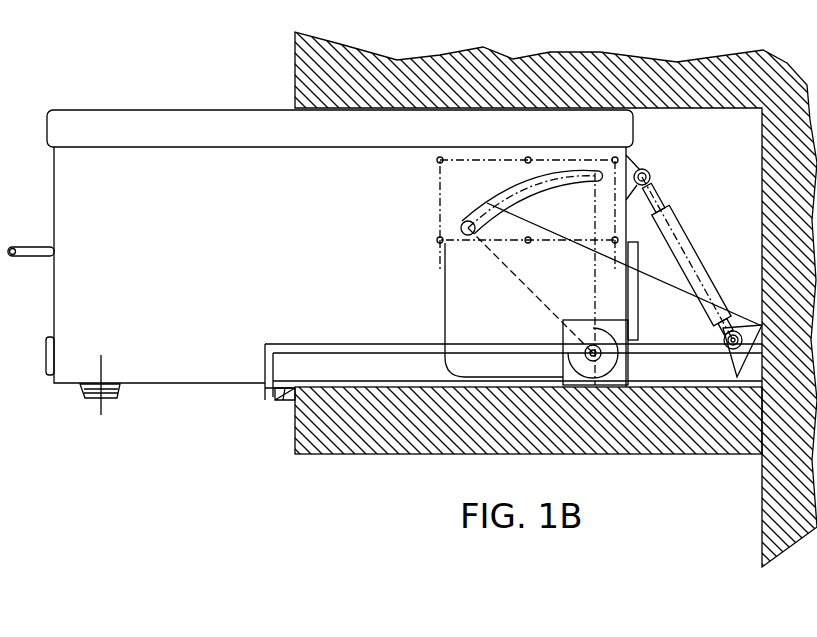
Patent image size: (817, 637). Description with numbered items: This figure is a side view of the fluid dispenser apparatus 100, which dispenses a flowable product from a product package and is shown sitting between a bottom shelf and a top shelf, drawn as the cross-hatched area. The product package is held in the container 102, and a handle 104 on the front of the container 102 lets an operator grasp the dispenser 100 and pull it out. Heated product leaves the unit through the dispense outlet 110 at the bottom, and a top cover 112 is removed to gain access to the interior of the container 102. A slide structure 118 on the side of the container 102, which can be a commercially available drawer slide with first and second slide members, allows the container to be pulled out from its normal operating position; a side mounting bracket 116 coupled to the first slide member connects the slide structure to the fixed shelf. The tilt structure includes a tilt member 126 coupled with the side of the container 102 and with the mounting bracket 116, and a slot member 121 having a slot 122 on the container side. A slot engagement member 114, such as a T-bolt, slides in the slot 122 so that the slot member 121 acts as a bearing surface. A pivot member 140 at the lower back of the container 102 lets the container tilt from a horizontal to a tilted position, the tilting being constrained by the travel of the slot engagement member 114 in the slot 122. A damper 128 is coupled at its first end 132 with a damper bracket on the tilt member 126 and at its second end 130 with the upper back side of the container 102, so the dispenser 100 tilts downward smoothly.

The fluid dispenser apparatus 100 is at (73, 110).
The container 102 is at (290, 219).
The handle 104 is at (33, 258).
The dispense outlet 110 is at (110, 395).
The top cover 112 is at (132, 142).
The slot engagement member 114 is at (460, 224).
The side mounting bracket 116 is at (273, 393).
The slide structure 118 is at (265, 357).
The slot member 121 is at (452, 193).
The slot 122 is at (520, 183).
The tilt member 126 is at (465, 285).
The damper 128 is at (677, 222).
The second end of damper 130 is at (638, 172).
The first end of damper 132 is at (740, 330).
The pivot member 140 is at (573, 340).